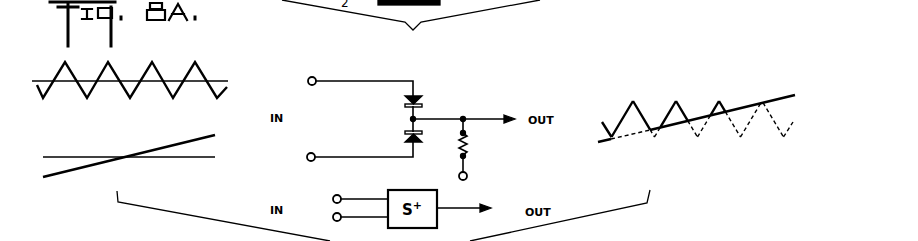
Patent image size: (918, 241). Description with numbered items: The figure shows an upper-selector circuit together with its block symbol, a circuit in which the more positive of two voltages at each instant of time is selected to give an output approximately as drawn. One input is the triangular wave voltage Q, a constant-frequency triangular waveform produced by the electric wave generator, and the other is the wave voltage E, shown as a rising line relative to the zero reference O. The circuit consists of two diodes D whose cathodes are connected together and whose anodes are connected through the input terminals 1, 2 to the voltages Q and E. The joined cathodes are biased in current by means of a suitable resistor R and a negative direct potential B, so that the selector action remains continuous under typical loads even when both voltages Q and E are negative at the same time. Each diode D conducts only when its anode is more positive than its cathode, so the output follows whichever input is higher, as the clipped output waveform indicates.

The triangular wave voltage Q is at (158, 68).
The zero reference line O is at (120, 156).
The input wave voltage E is at (120, 161).
The diode D is at (405, 101).
The resistor R is at (469, 147).
The negative direct potential B is at (472, 172).
The input terminal 1 is at (345, 196).
The input terminal 2 is at (328, 195).